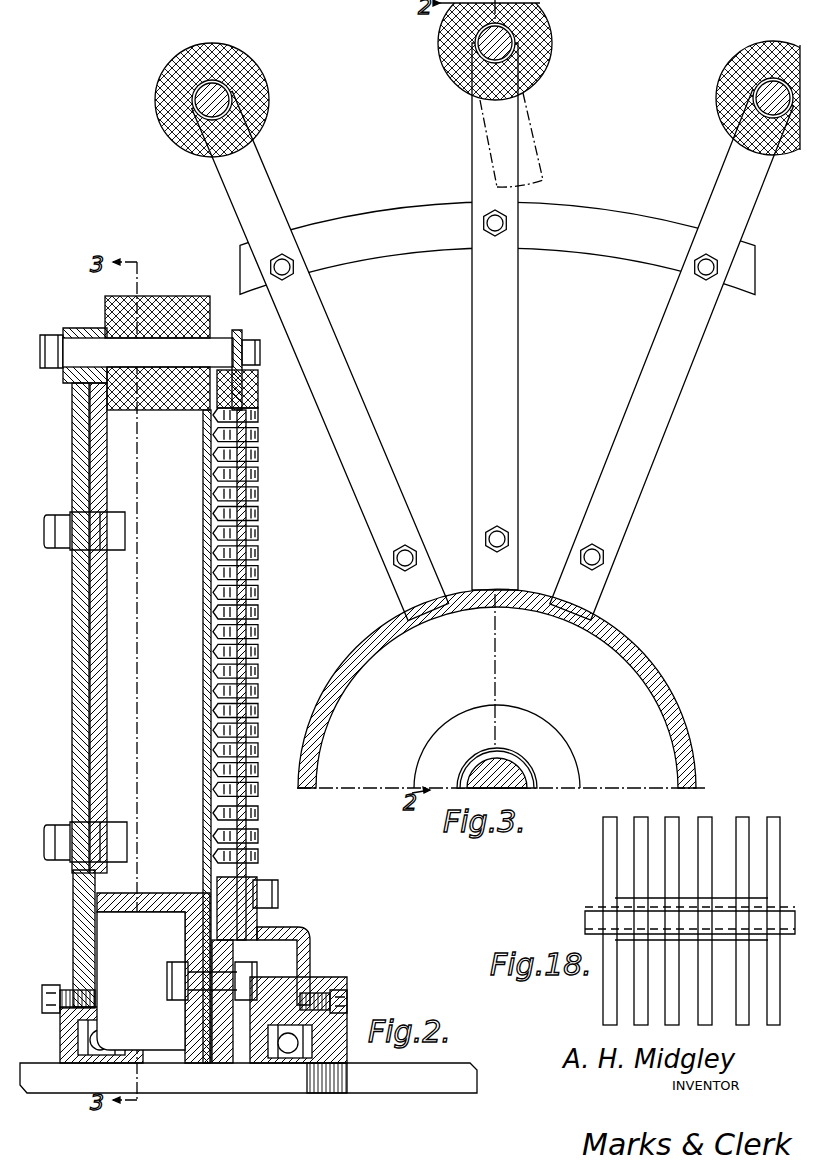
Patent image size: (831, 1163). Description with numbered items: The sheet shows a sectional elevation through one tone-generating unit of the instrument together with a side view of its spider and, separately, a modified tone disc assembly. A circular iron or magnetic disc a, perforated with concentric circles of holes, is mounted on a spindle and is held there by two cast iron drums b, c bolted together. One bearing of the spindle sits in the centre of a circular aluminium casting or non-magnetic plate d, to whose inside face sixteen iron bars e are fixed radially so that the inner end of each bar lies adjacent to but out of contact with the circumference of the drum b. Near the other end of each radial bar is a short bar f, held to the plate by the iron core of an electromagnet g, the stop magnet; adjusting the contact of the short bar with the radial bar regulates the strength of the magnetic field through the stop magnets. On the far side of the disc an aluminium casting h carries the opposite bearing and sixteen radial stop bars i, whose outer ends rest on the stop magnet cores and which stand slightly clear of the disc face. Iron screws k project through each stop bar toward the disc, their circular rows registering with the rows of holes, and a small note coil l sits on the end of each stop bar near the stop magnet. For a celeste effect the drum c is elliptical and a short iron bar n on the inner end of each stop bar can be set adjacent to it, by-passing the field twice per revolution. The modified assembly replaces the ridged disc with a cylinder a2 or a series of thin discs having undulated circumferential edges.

In FIG. 2, the apertured magnetic disc a is at (204, 873).
In FIG. 18, the cylinder a2 is at (772, 822).
In FIG. 2, the cast iron drum b is at (152, 1050).
In FIG. 3, the cast iron drum b is at (652, 690).
In FIG. 2, the cast iron drum c is at (222, 1065).
In FIG. 2, the aluminium plate d is at (74, 932).
In FIG. 3, the aluminium plate d is at (522, 720).
In FIG. 2, the radial iron bar e is at (108, 625).
In FIG. 3, the radial iron bar e is at (377, 443).
In FIG. 2, the short bar f is at (108, 452).
In FIG. 3, the short bar f is at (272, 193).
In FIG. 2, the stop magnet g is at (148, 297).
In FIG. 3, the stop magnet g is at (268, 100).
In FIG. 2, the aluminium casting h is at (312, 963).
In FIG. 2, the stop bar i is at (247, 842).
In FIG. 2, the iron screw k is at (262, 650).
In FIG. 2, the note coil l is at (258, 390).
In FIG. 2, the short iron bar n is at (262, 920).